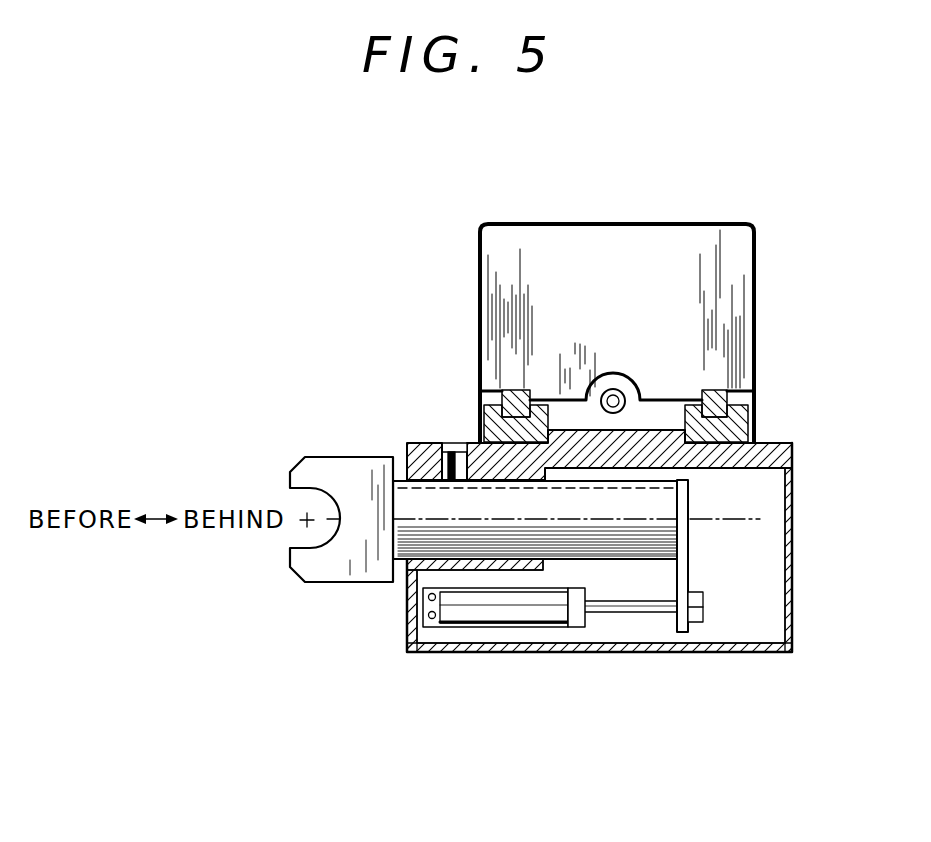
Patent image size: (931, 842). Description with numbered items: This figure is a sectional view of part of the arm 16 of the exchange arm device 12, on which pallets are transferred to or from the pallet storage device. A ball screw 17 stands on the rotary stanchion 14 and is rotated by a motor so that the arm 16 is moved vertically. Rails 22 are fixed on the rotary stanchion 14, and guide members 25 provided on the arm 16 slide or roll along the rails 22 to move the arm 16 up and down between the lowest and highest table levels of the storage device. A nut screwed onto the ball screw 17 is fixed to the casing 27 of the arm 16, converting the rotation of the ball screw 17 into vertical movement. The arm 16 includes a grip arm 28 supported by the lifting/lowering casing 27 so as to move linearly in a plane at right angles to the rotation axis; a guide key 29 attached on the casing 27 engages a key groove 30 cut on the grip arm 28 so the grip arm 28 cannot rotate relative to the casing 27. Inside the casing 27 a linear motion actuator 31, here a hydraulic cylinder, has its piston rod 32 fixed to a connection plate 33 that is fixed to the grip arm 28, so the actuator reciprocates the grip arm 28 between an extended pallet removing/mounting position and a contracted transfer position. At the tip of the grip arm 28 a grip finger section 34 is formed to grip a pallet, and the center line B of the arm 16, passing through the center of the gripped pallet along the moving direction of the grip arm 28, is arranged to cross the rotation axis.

The exchange arm device 12 is at (456, 382).
The rotary stanchion 14 is at (500, 286).
The arm 16 is at (387, 593).
The ball screw 17 is at (621, 392).
The rails 22 is at (517, 398).
The guide members 25 is at (498, 431).
The casing 27 is at (766, 462).
The grip arm 28 is at (477, 545).
The guide key 29 is at (410, 457).
The key groove 30 is at (618, 476).
The linear motion actuator 31 is at (515, 638).
The piston rod 32 is at (643, 613).
The connection plate 33 is at (683, 548).
The grip finger section 34 is at (307, 560).
The center line B is at (368, 522).